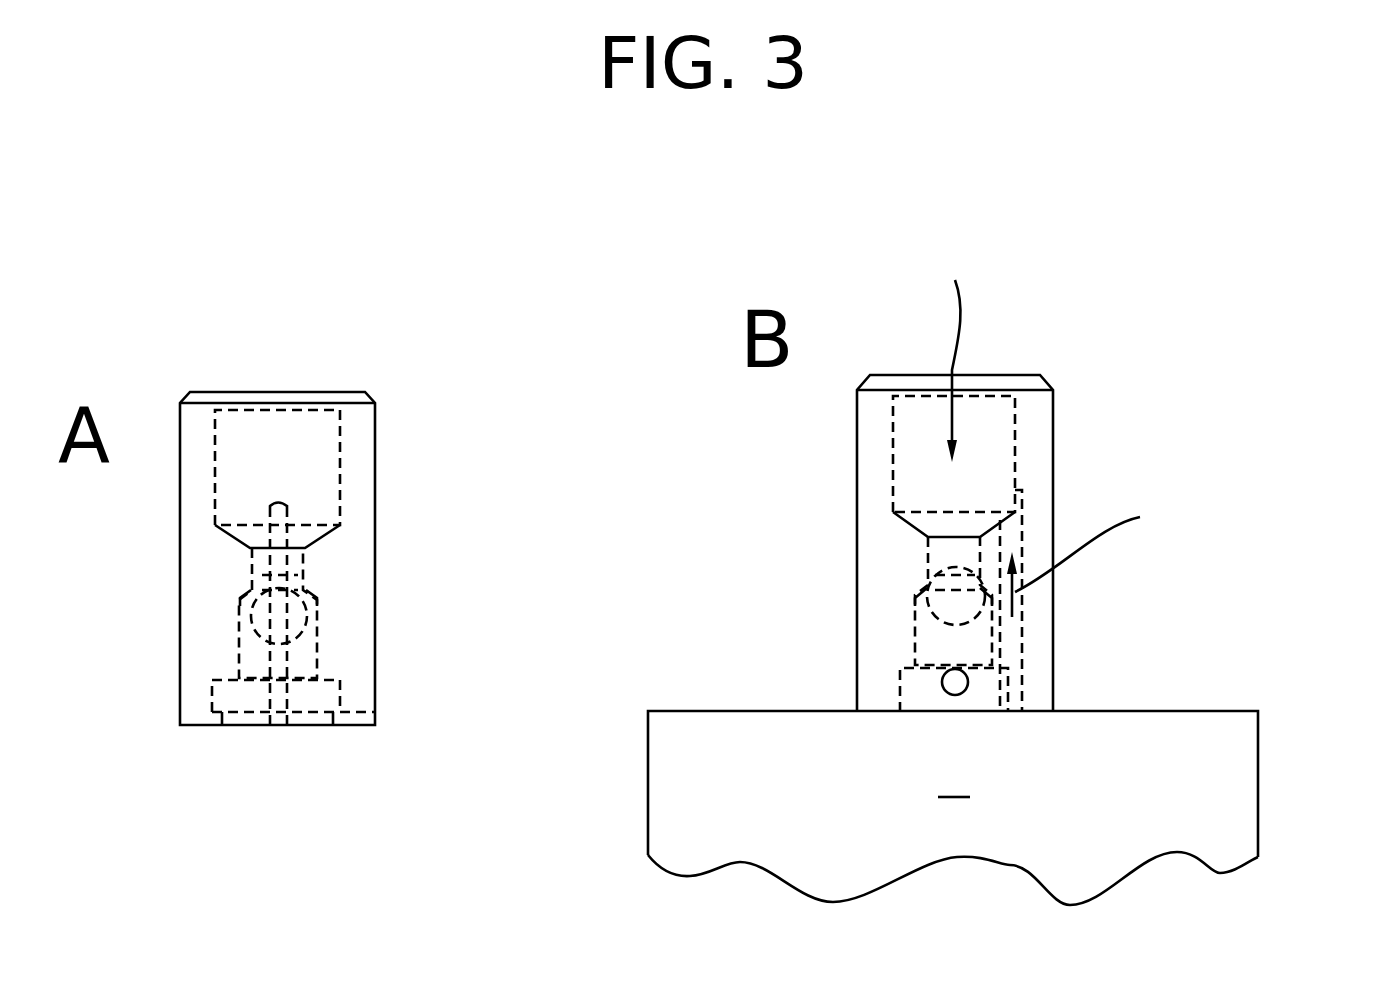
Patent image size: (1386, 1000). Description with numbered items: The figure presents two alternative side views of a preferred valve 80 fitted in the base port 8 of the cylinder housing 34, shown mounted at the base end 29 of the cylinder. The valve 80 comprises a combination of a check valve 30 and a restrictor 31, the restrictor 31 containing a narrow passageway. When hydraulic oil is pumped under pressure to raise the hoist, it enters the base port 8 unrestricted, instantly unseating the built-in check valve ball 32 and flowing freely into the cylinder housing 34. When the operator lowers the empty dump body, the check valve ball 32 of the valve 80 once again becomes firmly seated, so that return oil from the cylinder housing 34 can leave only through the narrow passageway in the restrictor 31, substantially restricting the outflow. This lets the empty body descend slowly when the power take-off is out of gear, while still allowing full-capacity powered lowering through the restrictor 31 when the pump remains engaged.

In FIG. 3A, the base port 8 is at (386, 517).
In FIG. 3B, the base port 8 is at (833, 497).
In FIG. 3A, the valve 80 is at (338, 460).
In FIG. 3B, the valve 80 is at (893, 460).
In FIG. 3A, the check valve 30 is at (325, 640).
In FIG. 3B, the check valve 30 is at (906, 640).
In FIG. 3A, the check valve ball 32 is at (315, 612).
In FIG. 3B, the check valve ball 32 is at (920, 602).
In FIG. 3A, the restrictor 31 is at (283, 665).
In FIG. 3B, the restrictor 31 is at (1010, 640).
In FIG. 3B, the base end 29 is at (1260, 754).
In FIG. 3B, the cylinder housing 34 is at (1260, 825).